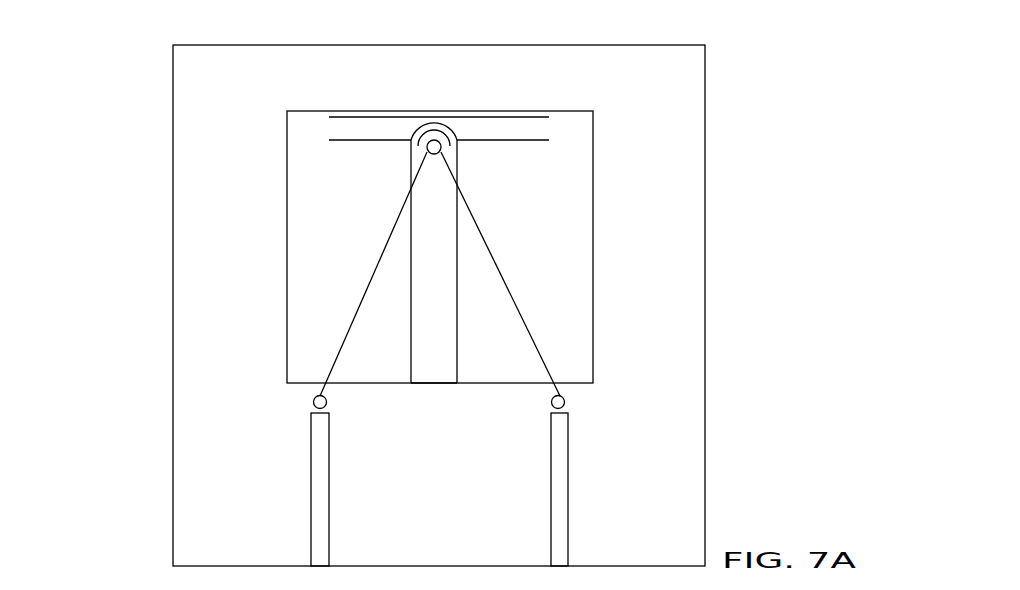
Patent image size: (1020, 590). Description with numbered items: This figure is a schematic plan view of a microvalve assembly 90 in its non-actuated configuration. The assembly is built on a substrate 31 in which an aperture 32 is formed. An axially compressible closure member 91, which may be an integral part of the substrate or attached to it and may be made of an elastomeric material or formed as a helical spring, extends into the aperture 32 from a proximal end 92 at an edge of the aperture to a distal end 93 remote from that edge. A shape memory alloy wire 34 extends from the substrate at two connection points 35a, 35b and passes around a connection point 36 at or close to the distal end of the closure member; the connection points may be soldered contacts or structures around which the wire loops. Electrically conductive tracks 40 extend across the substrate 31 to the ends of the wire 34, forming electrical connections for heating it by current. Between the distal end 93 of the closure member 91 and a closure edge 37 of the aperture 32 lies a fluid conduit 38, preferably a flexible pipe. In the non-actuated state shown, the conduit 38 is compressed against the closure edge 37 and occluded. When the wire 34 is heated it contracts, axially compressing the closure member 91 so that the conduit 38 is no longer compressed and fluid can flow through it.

The microvalve assembly 90 is at (141, 46).
The substrate 31 is at (638, 65).
The aperture 32 is at (572, 200).
The shape memory alloy wire 34 is at (355, 312).
The connection point 35a is at (314, 404).
The connection point 35b is at (564, 404).
The connection point 36 is at (431, 158).
The closure edge 37 is at (473, 111).
The fluid conduit 38 is at (502, 142).
The electrically conductive tracks 40 is at (311, 490).
The axially compressible closure member 91 is at (432, 298).
The proximal end 92 is at (433, 373).
The distal end 93 is at (412, 146).